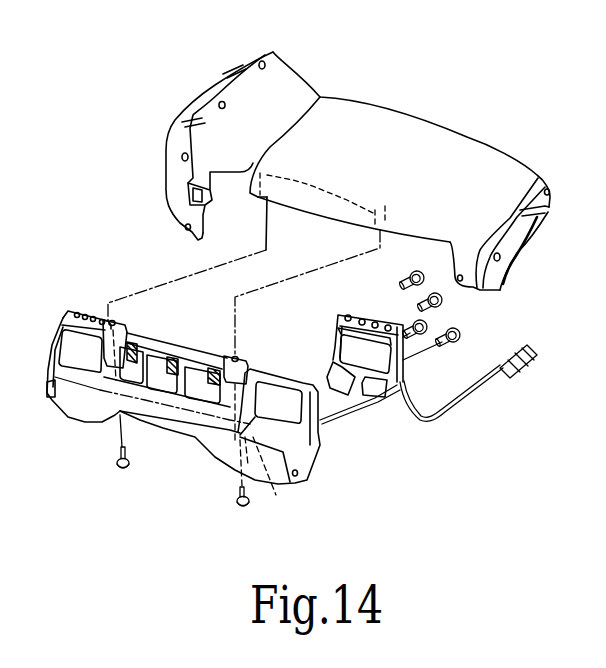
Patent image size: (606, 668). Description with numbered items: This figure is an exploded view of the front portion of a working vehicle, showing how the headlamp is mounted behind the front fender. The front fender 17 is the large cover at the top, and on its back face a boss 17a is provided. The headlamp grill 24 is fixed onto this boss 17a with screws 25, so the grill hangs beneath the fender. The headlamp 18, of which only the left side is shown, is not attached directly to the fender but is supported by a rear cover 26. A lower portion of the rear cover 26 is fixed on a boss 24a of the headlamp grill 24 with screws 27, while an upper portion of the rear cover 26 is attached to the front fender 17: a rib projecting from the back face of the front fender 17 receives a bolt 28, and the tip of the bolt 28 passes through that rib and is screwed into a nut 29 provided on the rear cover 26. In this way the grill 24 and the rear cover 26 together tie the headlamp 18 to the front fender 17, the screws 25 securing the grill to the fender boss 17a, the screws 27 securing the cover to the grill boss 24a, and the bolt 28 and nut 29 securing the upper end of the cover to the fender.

The front fender 17 is at (385, 127).
The boss 17a is at (318, 168).
The headlamp 18 is at (345, 352).
The headlamp grill 24 is at (73, 403).
The boss 24a is at (285, 503).
The screws 25 is at (125, 470).
The rear cover 26 is at (400, 375).
The screws 27 is at (428, 326).
The bolt 28 is at (398, 286).
The nut 29 is at (334, 320).